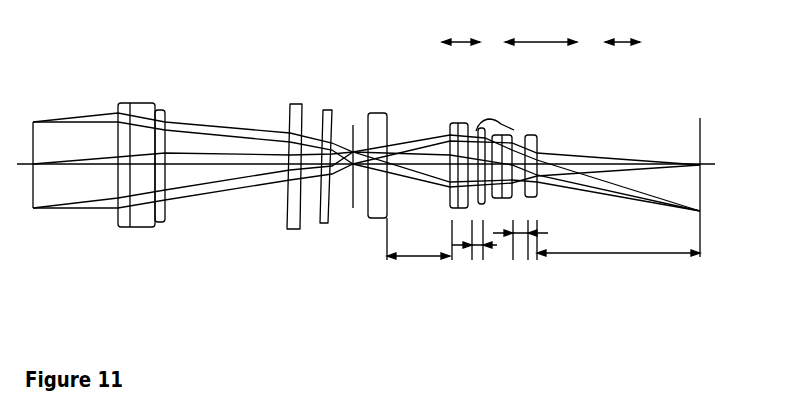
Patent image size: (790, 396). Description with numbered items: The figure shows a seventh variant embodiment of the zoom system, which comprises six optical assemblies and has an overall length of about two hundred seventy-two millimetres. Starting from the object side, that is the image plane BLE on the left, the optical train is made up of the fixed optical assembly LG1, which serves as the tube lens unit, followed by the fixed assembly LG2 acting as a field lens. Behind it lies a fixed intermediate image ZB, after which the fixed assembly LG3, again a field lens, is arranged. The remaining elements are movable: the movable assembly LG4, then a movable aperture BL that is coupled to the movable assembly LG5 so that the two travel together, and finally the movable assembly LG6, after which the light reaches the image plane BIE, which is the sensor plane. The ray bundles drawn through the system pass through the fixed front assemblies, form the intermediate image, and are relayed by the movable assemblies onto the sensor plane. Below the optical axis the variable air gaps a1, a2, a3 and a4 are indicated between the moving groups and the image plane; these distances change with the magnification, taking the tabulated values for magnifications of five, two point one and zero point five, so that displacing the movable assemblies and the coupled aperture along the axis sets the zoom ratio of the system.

The image plane BLE is at (53, 132).
The fixed optical assembly LG1 is at (137, 102).
The fixed assembly LG2 is at (341, 103).
The fixed intermediate image ZB is at (357, 118).
The fixed assembly LG3 is at (377, 107).
The movable assembly LG4 is at (458, 125).
The movable aperture BL is at (490, 118).
The movable assembly LG5 is at (520, 133).
The movable assembly LG6 is at (538, 132).
The image plane BIE is at (695, 137).
The distance a1 is at (418, 280).
The distance a2 is at (474, 274).
The distance a3 is at (520, 268).
The distance a4 is at (618, 278).